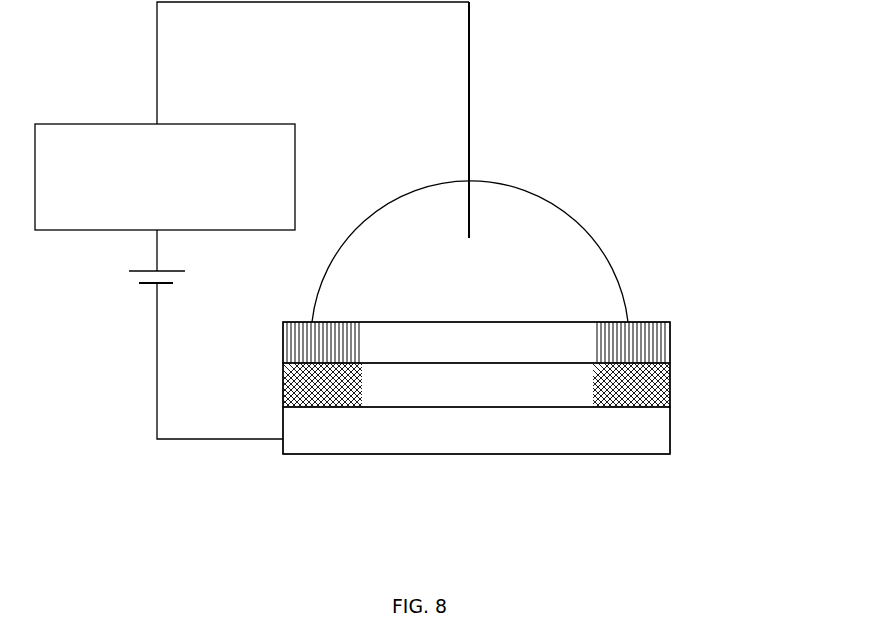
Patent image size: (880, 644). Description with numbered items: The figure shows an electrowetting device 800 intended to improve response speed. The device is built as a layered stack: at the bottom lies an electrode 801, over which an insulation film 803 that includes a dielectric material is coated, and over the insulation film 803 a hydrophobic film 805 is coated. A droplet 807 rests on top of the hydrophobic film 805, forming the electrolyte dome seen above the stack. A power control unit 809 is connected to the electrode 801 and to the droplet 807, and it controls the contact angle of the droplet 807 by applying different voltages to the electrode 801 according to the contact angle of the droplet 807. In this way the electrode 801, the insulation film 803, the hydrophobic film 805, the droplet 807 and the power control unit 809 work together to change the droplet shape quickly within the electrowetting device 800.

The electrowetting device 800 is at (494, 529).
The electrode 801 is at (670, 435).
The insulation film 803 is at (670, 378).
The hydrophobic film 805 is at (670, 343).
The droplet 807 is at (612, 280).
The power control unit 809 is at (91, 124).